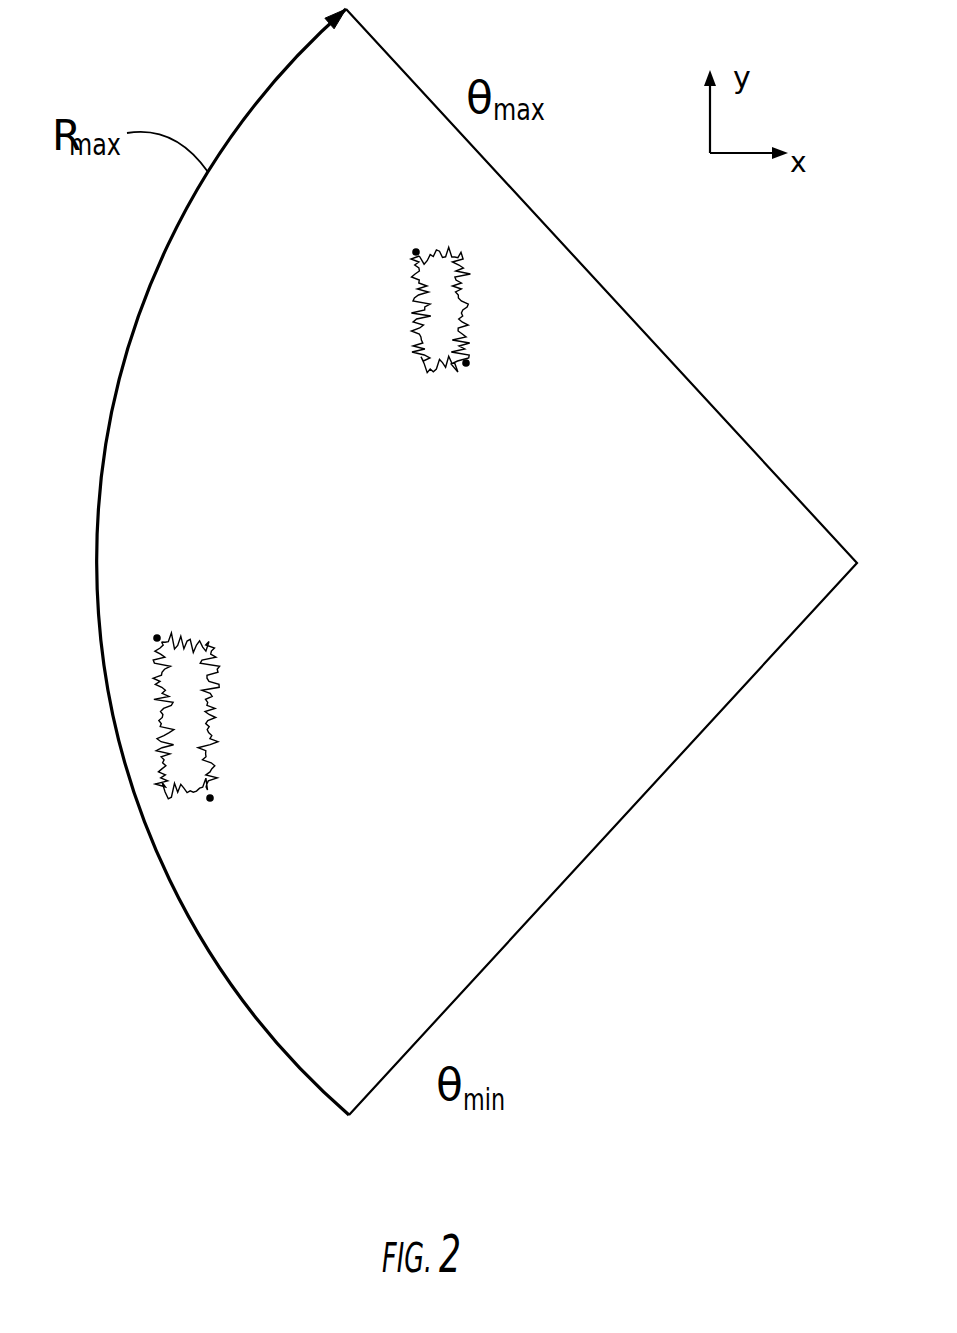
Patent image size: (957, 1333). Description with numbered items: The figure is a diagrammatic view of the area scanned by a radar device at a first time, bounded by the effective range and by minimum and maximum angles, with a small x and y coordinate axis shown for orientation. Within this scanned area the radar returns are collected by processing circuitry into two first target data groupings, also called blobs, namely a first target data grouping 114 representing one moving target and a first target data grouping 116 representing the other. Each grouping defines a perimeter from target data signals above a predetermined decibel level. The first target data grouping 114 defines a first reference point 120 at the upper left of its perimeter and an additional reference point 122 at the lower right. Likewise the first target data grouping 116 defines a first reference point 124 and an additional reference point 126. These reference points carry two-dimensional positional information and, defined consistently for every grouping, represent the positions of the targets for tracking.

The first target data grouping 114 is at (468, 308).
The first target data grouping 116 is at (218, 730).
The first reference point 120 is at (416, 252).
The additional reference point 122 is at (466, 363).
The first reference point 124 is at (157, 638).
The additional reference point 126 is at (210, 798).